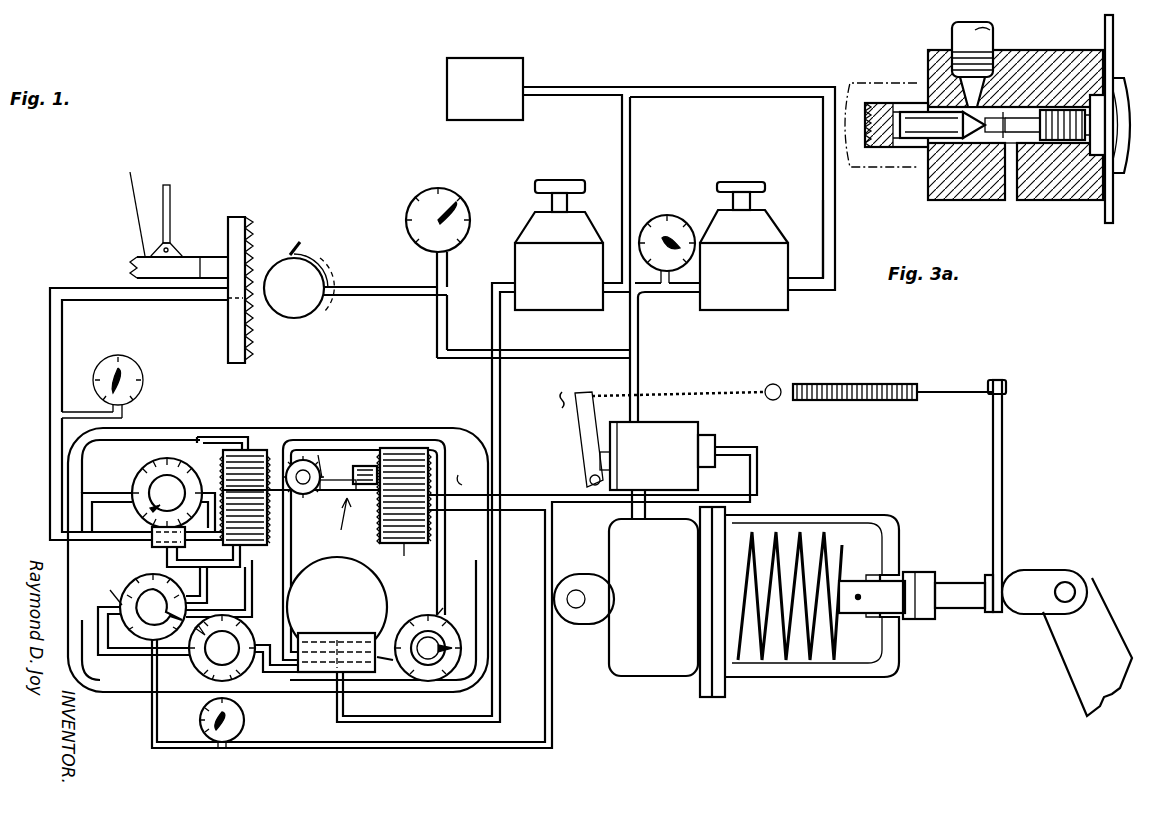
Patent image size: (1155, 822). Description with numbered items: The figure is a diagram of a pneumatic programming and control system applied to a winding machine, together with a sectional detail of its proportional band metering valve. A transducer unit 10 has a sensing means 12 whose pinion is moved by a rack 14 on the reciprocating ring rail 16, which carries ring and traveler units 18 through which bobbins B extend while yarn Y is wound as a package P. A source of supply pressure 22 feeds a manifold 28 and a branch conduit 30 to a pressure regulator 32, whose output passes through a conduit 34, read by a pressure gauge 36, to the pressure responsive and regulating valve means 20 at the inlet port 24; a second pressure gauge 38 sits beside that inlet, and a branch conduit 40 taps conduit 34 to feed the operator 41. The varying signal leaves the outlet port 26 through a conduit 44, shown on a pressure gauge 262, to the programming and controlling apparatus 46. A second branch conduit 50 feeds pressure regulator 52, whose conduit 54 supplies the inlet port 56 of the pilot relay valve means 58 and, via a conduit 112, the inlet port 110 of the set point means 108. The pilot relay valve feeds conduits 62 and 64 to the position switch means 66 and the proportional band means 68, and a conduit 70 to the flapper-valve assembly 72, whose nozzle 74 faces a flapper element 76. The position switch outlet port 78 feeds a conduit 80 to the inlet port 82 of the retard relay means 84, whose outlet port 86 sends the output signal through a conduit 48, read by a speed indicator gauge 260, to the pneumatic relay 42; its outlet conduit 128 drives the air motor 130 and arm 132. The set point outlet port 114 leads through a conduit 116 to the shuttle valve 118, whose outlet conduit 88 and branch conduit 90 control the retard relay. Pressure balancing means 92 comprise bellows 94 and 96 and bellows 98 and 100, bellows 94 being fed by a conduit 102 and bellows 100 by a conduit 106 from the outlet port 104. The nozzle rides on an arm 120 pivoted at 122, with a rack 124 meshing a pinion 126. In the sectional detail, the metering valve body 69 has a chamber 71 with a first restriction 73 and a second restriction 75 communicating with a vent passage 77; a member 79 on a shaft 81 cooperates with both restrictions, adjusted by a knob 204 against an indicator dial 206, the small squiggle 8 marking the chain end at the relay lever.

In FIG. 1, the transducer unit 10 is at (312, 238).
In FIG. 1, the sensing means 12 is at (270, 325).
In FIG. 1, the rack 14 is at (228, 336).
In FIG. 1, the ring rail 16 is at (204, 256).
In FIG. 1, the ring and traveler units 18 is at (143, 252).
In FIG. 1, the pressure responsive and regulating valve means 20 is at (318, 262).
In FIG. 1, the source of supply pressure 22 is at (516, 55).
In FIG. 1, the inlet port 24 is at (335, 280).
In FIG. 1, the outlet port 26 is at (236, 308).
In FIG. 1, the manifold 28 is at (598, 90).
In FIG. 1, the branch conduit 30 is at (823, 114).
In FIG. 1, the pressure regulator 32 is at (784, 305).
In FIG. 1, the conduit 34 is at (380, 296).
In FIG. 1, the pressure gauge 36 is at (683, 222).
In FIG. 1, the second pressure gauge 38 is at (455, 204).
In FIG. 1, the branch conduit 40 is at (643, 380).
In FIG. 1, the pneumatic operator 41 is at (835, 495).
In FIG. 1, the pneumatic relay 42 is at (702, 433).
In FIG. 1, the conduit 44 is at (50, 325).
In FIG. 1, the programming and controlling apparatus 46 is at (142, 726).
In FIG. 1, the conduit 48 is at (395, 748).
In FIG. 1, the second branch conduit 50 is at (620, 138).
In FIG. 1, the pressure regulator 52 is at (528, 225).
In FIG. 1, the conduit 54 is at (500, 430).
In FIG. 1, the inlet port 56 is at (358, 674).
In FIG. 1, the pilot relay valve means 58 is at (382, 585).
In FIG. 1, the conduit 62 is at (343, 698).
In FIG. 1, the conduit 64 is at (452, 708).
In FIG. 3a, the conduit 64 is at (872, 168).
In FIG. 1, the position switch means 66 is at (250, 620).
In FIG. 1, the proportional band means 68 is at (462, 652).
In FIG. 3a, the proportional band means 68 is at (930, 214).
In FIG. 3a, the body 69 is at (1060, 200).
In FIG. 1, the conduit 70 is at (275, 562).
In FIG. 3a, the chamber 71 is at (898, 100).
In FIG. 1, the flapper-valve assembly 72 is at (341, 525).
In FIG. 3a, the first restriction 73 is at (856, 82).
In FIG. 1, the nozzle 74 is at (348, 467).
In FIG. 3a, the second restriction 75 is at (985, 150).
In FIG. 1, the flapper element 76 is at (350, 506).
In FIG. 3a, the vent passage 77 is at (1011, 200).
In FIG. 1, the outlet port 78 is at (192, 654).
In FIG. 3a, the member 79 is at (910, 168).
In FIG. 1, the conduit 80 is at (120, 664).
In FIG. 3a, the shaft 81 is at (1088, 50).
In FIG. 1, the inlet port 82 is at (107, 580).
In FIG. 1, the retard relay means 84 is at (143, 575).
In FIG. 1, the outlet port 86 is at (148, 645).
In FIG. 1, the conduit 88 is at (190, 560).
In FIG. 1, the branch conduit 90 is at (200, 586).
In FIG. 1, the pressure balancing means 92 is at (344, 421).
In FIG. 1, the bellows 94 is at (272, 524).
In FIG. 1, the bellows 96 is at (261, 392).
In FIG. 1, the bellows 98 is at (470, 513).
In FIG. 1, the bellows 100 is at (395, 442).
In FIG. 1, the conduit 102 is at (220, 588).
In FIG. 1, the outlet port 104 is at (457, 595).
In FIG. 3a, the outlet port 104 is at (952, 50).
In FIG. 1, the conduit 106 is at (448, 404).
In FIG. 3a, the conduit 106 is at (995, 38).
In FIG. 1, the set point means 108 is at (153, 467).
In FIG. 1, the inlet port 110 is at (135, 478).
In FIG. 1, the conduit 112 is at (86, 493).
In FIG. 1, the outlet port 114 is at (190, 463).
In FIG. 1, the conduit 116 is at (220, 446).
In FIG. 1, the shuttle valve 118 is at (150, 536).
In FIG. 1, the arm 120 is at (448, 460).
In FIG. 1, the pivot 122 is at (490, 490).
In FIG. 1, the rack 124 is at (324, 429).
In FIG. 1, the pinion 126 is at (298, 460).
In FIG. 1, the outlet conduit 128 is at (630, 514).
In FIG. 1, the air motor 130 is at (753, 677).
In FIG. 1, the arm 132 is at (1075, 670).
In FIG. 3a, the knob 204 is at (1100, 160).
In FIG. 3a, the indicator dial 206 is at (1108, 218).
In FIG. 1, the speed indicator gauge 260 is at (246, 714).
In FIG. 1, the pressure gauge 262 is at (150, 386).
In FIG. 1, the chain end 8 is at (564, 402).
In FIG. 1, the yarn Y is at (128, 190).
In FIG. 1, the bobbin B is at (172, 200).
In FIG. 1, the package P is at (180, 228).